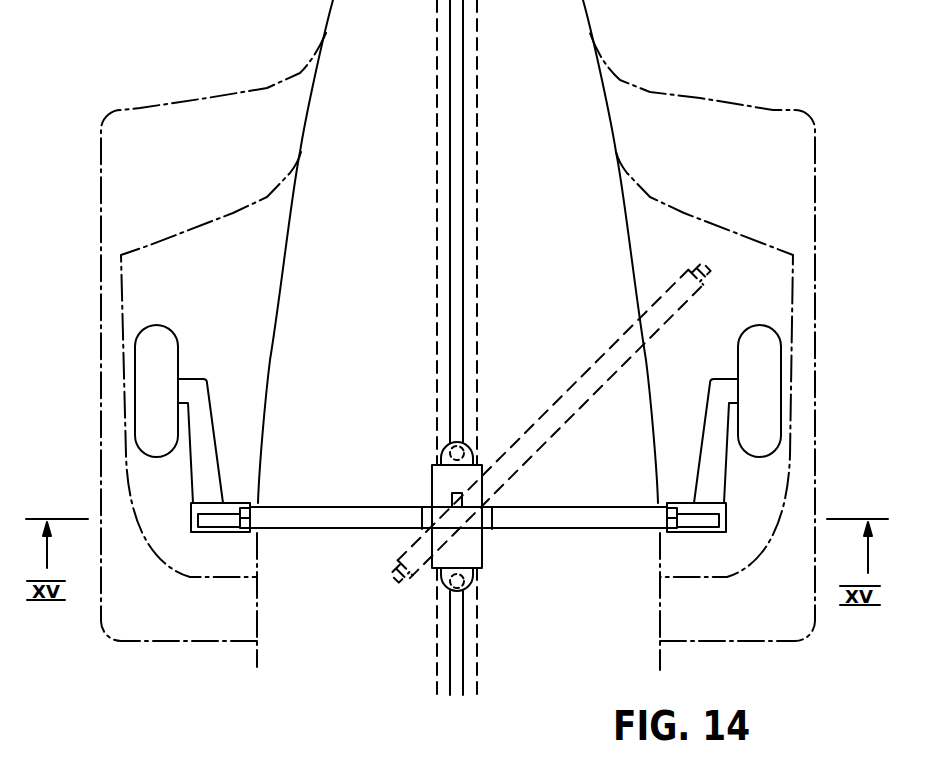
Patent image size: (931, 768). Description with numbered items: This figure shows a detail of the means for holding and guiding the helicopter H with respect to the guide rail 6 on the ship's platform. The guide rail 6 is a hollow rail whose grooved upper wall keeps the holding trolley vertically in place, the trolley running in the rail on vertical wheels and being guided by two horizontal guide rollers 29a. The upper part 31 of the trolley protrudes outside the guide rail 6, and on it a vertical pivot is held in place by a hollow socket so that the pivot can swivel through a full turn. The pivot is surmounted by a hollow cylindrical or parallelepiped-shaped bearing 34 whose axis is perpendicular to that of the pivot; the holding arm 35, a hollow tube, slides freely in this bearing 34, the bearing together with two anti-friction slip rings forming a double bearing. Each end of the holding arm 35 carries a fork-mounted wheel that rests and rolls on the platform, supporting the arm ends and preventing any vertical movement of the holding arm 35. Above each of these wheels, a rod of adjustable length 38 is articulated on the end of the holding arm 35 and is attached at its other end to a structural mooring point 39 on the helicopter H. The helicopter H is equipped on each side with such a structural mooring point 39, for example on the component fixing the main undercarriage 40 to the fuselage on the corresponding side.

The helicopter H is at (657, 92).
The guide rail 6 is at (453, 350).
The horizontal guide roller 29a is at (448, 440).
The upper part of the trolley 31 is at (476, 547).
The bearing 34 is at (430, 508).
The holding arm 35 is at (315, 512).
The rod of adjustable length 38 is at (214, 518).
The structural mooring point 39 is at (192, 519).
The main undercarriage 40 is at (205, 385).